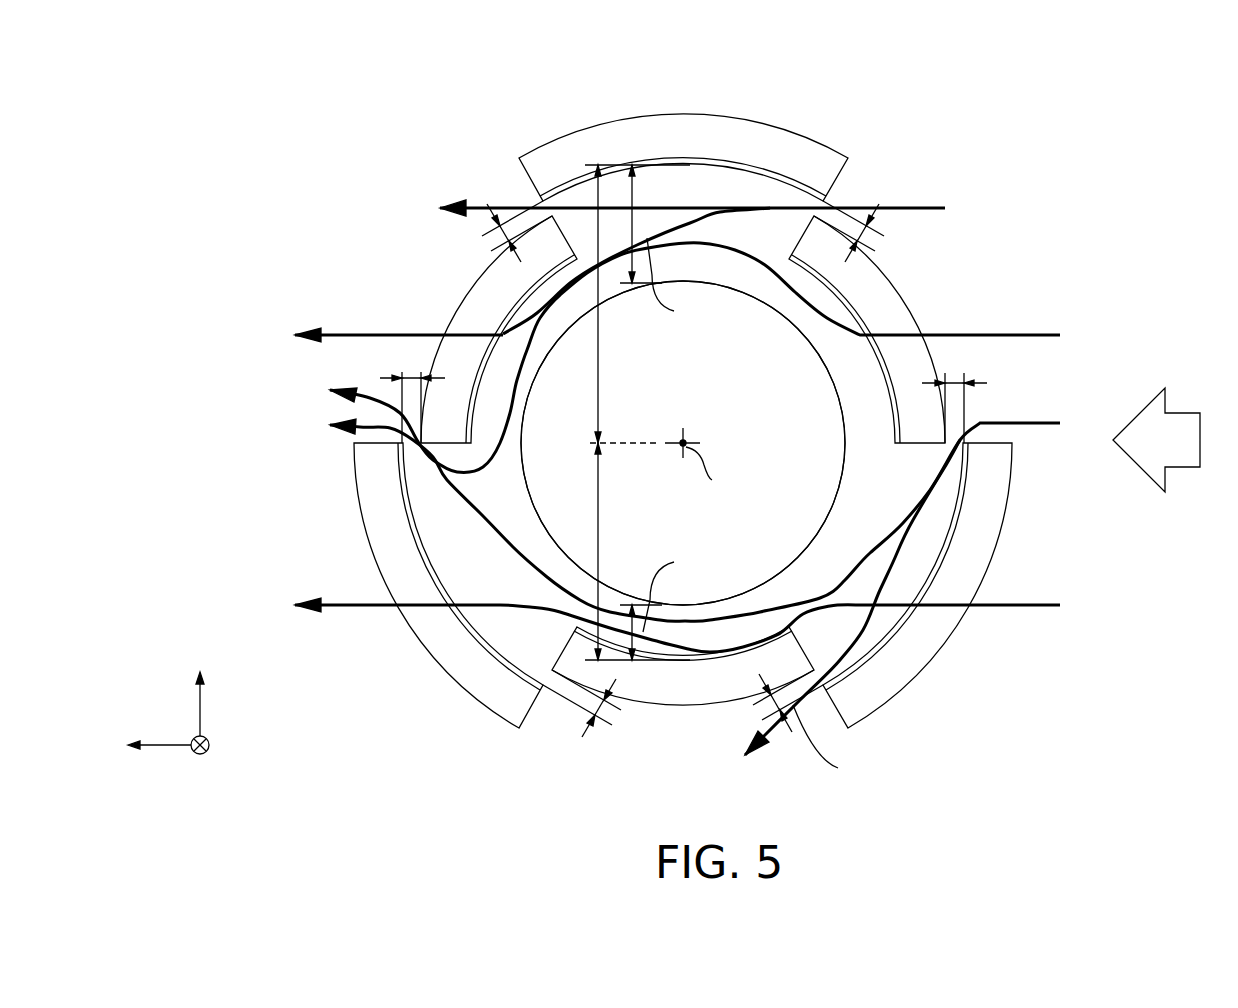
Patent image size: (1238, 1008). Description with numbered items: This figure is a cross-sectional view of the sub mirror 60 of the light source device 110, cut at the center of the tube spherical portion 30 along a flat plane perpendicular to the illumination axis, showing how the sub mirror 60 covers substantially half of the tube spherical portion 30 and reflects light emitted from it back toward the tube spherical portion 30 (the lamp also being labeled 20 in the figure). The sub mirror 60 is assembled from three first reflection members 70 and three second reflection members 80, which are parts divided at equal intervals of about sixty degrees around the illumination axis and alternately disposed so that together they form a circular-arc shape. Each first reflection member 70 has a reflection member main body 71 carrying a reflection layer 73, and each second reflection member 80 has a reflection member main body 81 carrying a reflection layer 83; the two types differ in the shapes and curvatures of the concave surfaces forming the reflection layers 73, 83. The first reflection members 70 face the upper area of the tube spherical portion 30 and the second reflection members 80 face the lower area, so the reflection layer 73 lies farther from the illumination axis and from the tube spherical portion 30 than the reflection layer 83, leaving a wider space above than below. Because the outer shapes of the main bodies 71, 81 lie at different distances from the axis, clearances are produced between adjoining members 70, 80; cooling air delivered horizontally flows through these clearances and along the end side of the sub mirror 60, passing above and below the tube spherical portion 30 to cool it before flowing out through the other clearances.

The sub mirror 60 is at (406, 156).
The light source device 110 is at (246, 299).
The tube spherical portion 30 is at (819, 358).
The light source 20 is at (683, 443).
The first reflection member 70 is at (683, 385).
The reflection member main body 71 is at (655, 113).
The reflection layer 73 is at (729, 165).
The second reflection member 80 is at (683, 513).
The reflection member main body 81 is at (720, 692).
The reflection layer 83 is at (700, 652).